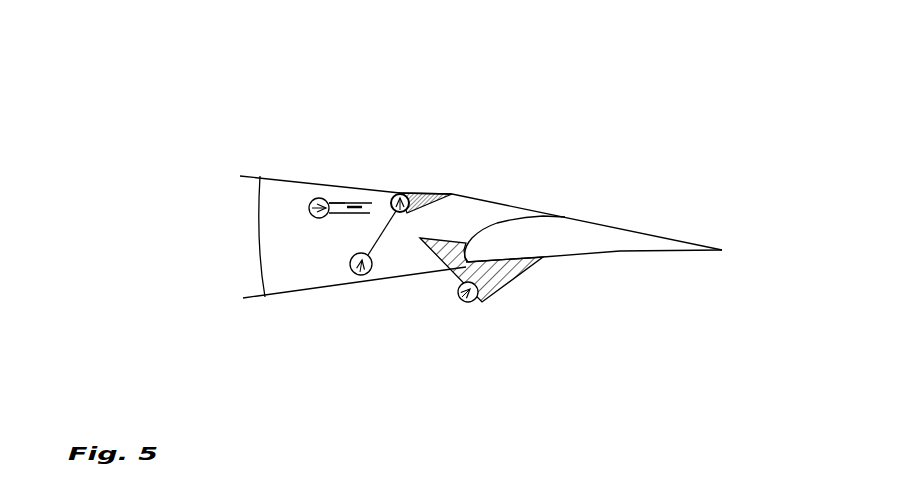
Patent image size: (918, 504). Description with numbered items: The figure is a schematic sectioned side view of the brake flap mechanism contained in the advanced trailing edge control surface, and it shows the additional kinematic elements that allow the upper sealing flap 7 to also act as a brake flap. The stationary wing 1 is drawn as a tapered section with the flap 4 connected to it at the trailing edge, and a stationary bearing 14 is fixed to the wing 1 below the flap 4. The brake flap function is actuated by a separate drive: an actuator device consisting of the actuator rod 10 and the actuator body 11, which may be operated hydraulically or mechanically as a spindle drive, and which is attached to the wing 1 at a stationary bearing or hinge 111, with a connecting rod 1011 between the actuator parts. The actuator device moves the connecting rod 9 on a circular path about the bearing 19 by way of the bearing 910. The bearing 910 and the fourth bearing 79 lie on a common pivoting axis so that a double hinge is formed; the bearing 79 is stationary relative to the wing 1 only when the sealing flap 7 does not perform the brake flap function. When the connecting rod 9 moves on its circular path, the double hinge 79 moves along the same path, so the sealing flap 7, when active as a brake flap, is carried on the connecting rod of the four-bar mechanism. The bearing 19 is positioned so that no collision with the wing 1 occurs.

The wing 1 is at (259, 230).
The flap 4 is at (567, 258).
The sealing flap 7 is at (468, 195).
The connecting rod 9 is at (378, 240).
The actuator rod 10 is at (369, 202).
The actuator body 11 is at (343, 198).
The stationary bearing 14 is at (466, 302).
The bearing 19 is at (358, 274).
The fourth bearing 79 is at (402, 192).
The stationary bearing, hinge 111 is at (308, 208).
The bearing 910 is at (400, 195).
The connecting rod 1011 is at (359, 204).